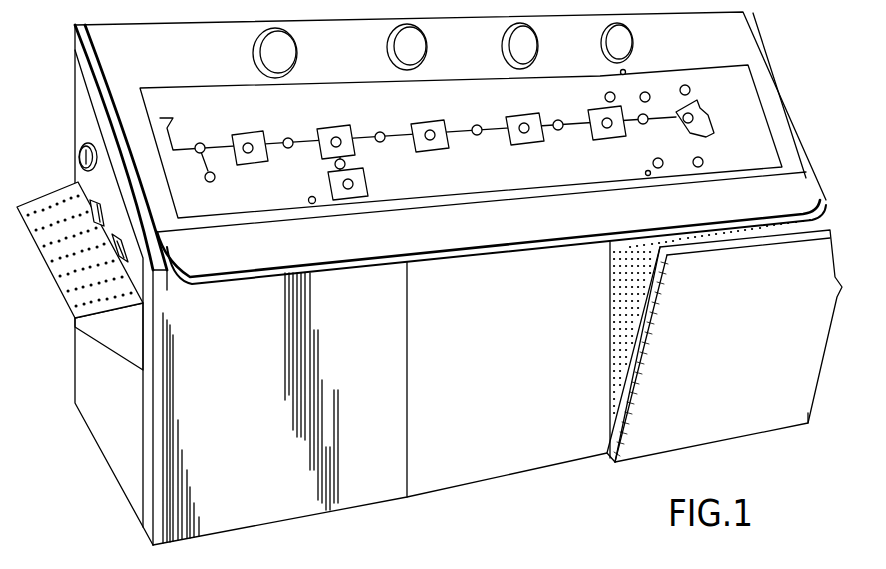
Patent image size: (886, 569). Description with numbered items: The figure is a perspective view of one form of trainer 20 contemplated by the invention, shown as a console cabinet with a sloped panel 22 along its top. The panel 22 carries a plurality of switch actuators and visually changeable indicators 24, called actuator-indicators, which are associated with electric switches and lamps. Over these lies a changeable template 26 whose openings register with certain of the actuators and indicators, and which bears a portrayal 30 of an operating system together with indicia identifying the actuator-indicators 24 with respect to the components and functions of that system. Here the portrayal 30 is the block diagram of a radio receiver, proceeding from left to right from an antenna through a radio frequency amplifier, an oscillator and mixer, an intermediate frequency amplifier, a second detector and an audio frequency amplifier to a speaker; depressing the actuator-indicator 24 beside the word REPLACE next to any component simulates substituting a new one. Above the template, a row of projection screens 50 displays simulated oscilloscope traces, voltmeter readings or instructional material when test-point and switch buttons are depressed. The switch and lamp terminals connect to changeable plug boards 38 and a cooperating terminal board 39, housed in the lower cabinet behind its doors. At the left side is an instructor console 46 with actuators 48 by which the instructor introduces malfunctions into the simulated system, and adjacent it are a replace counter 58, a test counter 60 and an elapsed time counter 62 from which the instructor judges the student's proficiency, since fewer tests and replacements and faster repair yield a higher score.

The trainer 20 is at (555, 470).
The panel 22 is at (777, 117).
The switch actuators and visually changeable indicators 24 is at (559, 131).
The changeable template 26 is at (537, 88).
The portrayal of an operating system 30 is at (356, 134).
The changeable plug boards 38 is at (273, 510).
The terminal board 39 is at (623, 307).
The instructor console 46 is at (107, 305).
The actuators 48 is at (50, 245).
The projection screens 50 is at (292, 66).
The replace counter 58 is at (99, 202).
The test counter 60 is at (118, 236).
The elapsed time counter 62 is at (83, 142).